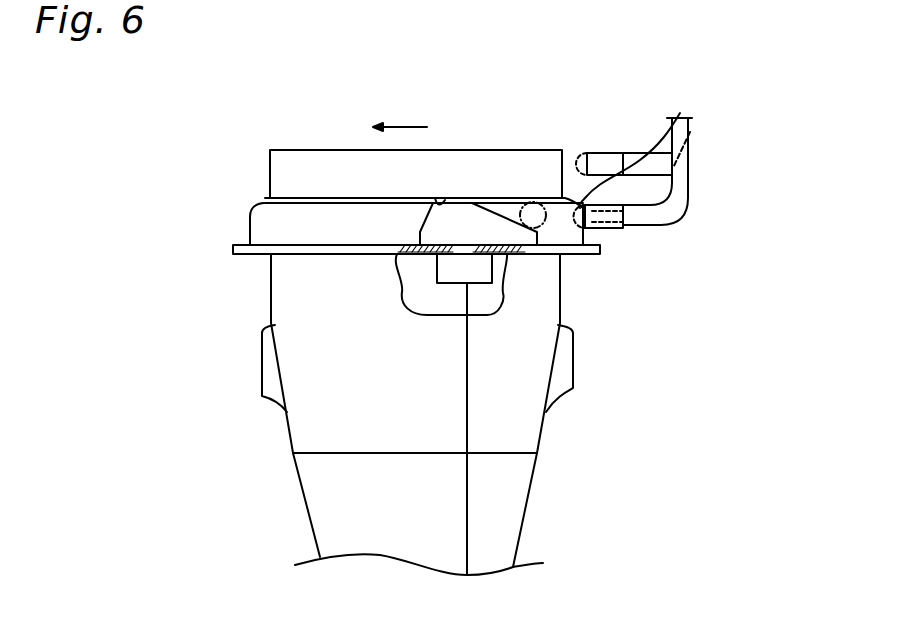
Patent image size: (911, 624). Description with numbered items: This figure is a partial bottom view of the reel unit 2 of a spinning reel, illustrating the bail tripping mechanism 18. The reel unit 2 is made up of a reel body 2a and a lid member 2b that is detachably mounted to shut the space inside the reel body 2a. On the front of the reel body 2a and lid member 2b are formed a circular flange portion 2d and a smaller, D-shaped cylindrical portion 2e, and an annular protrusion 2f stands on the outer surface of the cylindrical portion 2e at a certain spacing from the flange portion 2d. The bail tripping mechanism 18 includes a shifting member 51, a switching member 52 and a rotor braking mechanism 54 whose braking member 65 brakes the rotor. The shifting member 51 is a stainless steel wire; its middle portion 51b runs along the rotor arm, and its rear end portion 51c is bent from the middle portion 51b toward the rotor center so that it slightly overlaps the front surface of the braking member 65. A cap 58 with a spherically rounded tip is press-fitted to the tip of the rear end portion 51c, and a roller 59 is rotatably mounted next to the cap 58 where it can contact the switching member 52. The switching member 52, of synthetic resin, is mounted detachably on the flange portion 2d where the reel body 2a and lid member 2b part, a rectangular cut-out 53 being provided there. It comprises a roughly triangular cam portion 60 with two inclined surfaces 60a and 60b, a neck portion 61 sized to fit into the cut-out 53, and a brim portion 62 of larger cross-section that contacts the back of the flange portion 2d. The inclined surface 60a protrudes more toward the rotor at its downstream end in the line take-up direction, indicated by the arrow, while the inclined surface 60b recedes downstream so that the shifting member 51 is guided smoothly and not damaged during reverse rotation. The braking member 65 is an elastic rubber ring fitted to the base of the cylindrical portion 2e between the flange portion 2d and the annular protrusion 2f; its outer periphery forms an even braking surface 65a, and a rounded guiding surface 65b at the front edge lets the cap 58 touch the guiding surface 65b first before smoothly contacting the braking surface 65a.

The reel unit 2 is at (524, 490).
The reel body 2a is at (287, 428).
The lid member 2b is at (548, 424).
The flange portion 2d is at (605, 258).
The cylindrical portion 2e is at (545, 162).
The annular protrusion 2f is at (256, 206).
The bail tripping mechanism 18 is at (694, 153).
The shifting member 51 is at (696, 214).
The middle portion 51b is at (692, 132).
The rear end portion 51c is at (636, 224).
The switching member 52 is at (450, 180).
The cut-out 53 is at (467, 257).
The rotor braking mechanism 54 is at (624, 144).
The cap 58 is at (680, 116).
The roller 59 is at (538, 222).
The cam portion 60 is at (440, 232).
The inclined surface 60a is at (500, 203).
The inclined surface 60b is at (435, 198).
The neck portion 61 is at (403, 293).
The brim portion 62 is at (452, 268).
The braking member 65 is at (266, 218).
The braking surface 65a is at (250, 236).
The guiding surface 65b is at (255, 216).